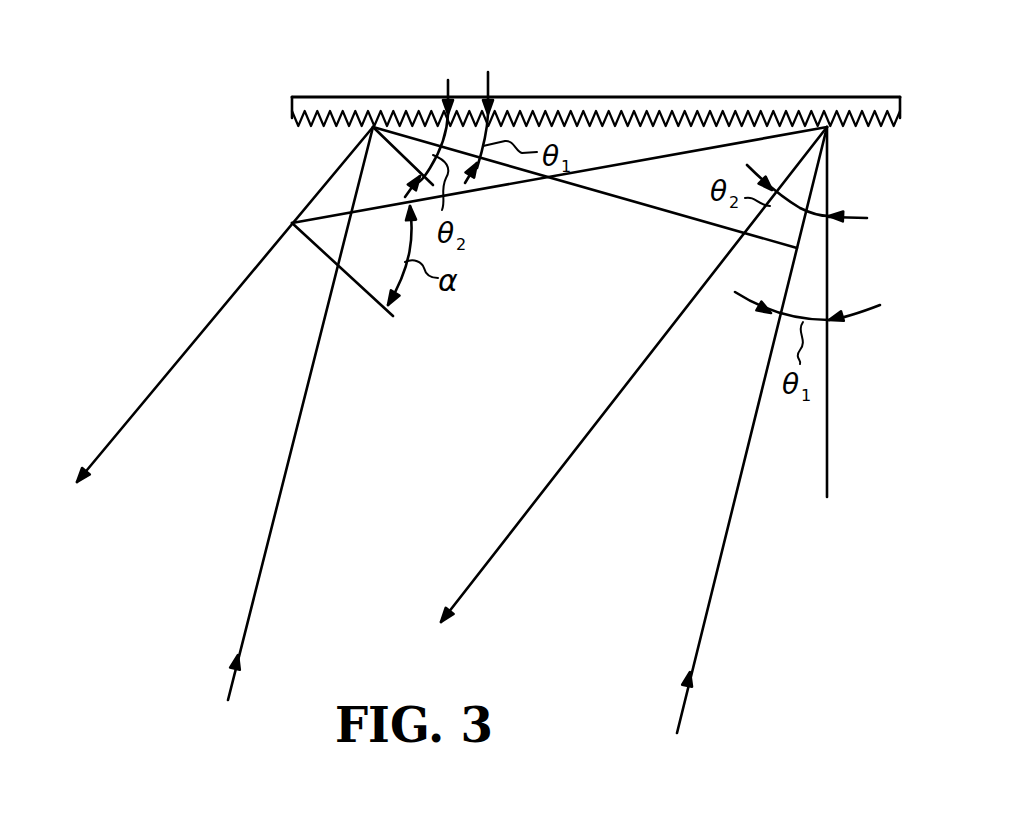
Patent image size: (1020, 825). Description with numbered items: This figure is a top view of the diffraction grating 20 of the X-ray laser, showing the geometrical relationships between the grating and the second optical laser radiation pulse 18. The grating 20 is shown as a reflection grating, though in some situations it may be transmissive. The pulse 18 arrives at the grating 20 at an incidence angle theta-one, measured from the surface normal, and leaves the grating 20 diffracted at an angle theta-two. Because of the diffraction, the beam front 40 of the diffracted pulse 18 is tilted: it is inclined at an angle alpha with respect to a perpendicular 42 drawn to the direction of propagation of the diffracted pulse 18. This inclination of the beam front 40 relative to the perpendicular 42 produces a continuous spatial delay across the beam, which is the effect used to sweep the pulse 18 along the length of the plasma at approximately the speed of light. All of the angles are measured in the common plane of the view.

The diffraction grating 20 is at (755, 97).
The second optical laser radiation pulse 18 is at (300, 413).
The beam front 40 is at (524, 172).
The perpendicular 42 is at (360, 286).